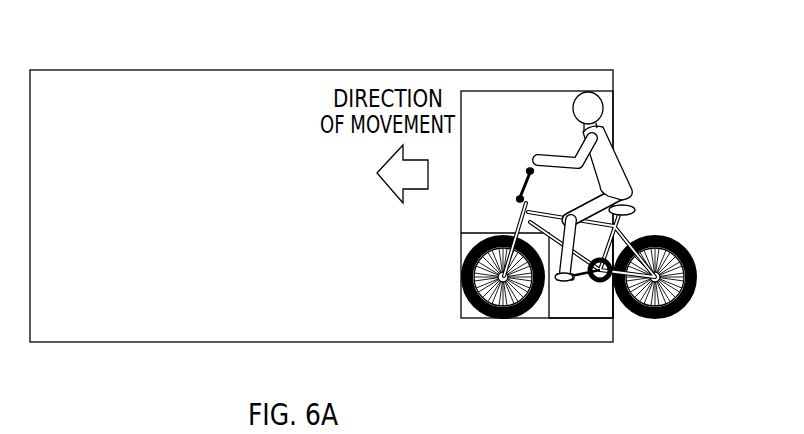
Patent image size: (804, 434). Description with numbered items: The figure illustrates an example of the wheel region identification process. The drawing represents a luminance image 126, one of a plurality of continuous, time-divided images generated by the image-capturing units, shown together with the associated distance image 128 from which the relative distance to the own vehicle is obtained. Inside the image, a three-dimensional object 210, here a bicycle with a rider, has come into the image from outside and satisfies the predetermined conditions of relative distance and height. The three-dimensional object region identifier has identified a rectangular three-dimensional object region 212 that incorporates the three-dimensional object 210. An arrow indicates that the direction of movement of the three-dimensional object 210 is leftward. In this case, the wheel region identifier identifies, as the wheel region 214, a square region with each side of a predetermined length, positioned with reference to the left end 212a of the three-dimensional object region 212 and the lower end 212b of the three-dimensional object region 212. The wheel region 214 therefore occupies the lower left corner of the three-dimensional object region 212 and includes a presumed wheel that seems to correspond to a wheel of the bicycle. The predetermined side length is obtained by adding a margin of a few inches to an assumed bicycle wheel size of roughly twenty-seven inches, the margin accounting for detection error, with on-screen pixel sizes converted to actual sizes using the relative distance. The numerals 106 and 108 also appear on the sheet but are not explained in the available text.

The luminance image 126 is at (321, 174).
The distance image 128 is at (103, 70).
The three-dimensional object region 212 is at (509, 90).
The left end of the three-dimensional object region 212a is at (461, 268).
The lower end of the three-dimensional object region 212b is at (575, 318).
The wheel region 214 is at (508, 228).
The three-dimensional object 210 is at (587, 108).
The image sensor 106 is at (569, 429).
The image sensor 108 is at (569, 429).